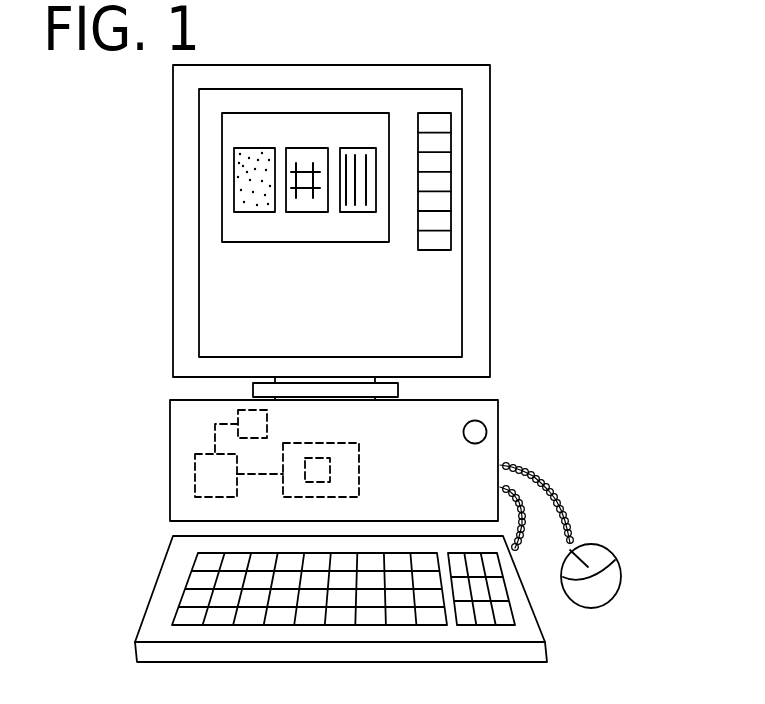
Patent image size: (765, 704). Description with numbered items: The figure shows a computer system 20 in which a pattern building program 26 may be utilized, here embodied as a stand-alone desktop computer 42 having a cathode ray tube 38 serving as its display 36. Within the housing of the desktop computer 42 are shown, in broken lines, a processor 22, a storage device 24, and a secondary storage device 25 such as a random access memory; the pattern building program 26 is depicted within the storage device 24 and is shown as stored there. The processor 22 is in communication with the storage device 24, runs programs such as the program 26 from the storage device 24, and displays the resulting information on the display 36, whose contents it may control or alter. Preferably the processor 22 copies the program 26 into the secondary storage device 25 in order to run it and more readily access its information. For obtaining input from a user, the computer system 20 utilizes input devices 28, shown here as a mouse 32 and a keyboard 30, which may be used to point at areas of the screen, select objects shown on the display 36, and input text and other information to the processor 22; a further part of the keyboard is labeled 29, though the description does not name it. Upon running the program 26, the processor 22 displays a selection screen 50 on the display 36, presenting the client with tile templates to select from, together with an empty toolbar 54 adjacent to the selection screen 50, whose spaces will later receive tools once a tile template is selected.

The computer system 20 is at (612, 226).
The processor 22 is at (210, 465).
The storage device 24 is at (343, 472).
The secondary storage device 25 is at (267, 424).
The pattern building program 26 is at (318, 475).
The input device 28 is at (607, 592).
The keyboard housing 29 is at (513, 657).
The keyboard 30 is at (532, 633).
The mouse 32 is at (617, 560).
The display 36 is at (480, 336).
The cathode ray tube 38 is at (330, 223).
The stand-alone desktop computer 42 is at (499, 430).
The selection screen 50 is at (278, 262).
The empty toolbar 54 is at (424, 266).